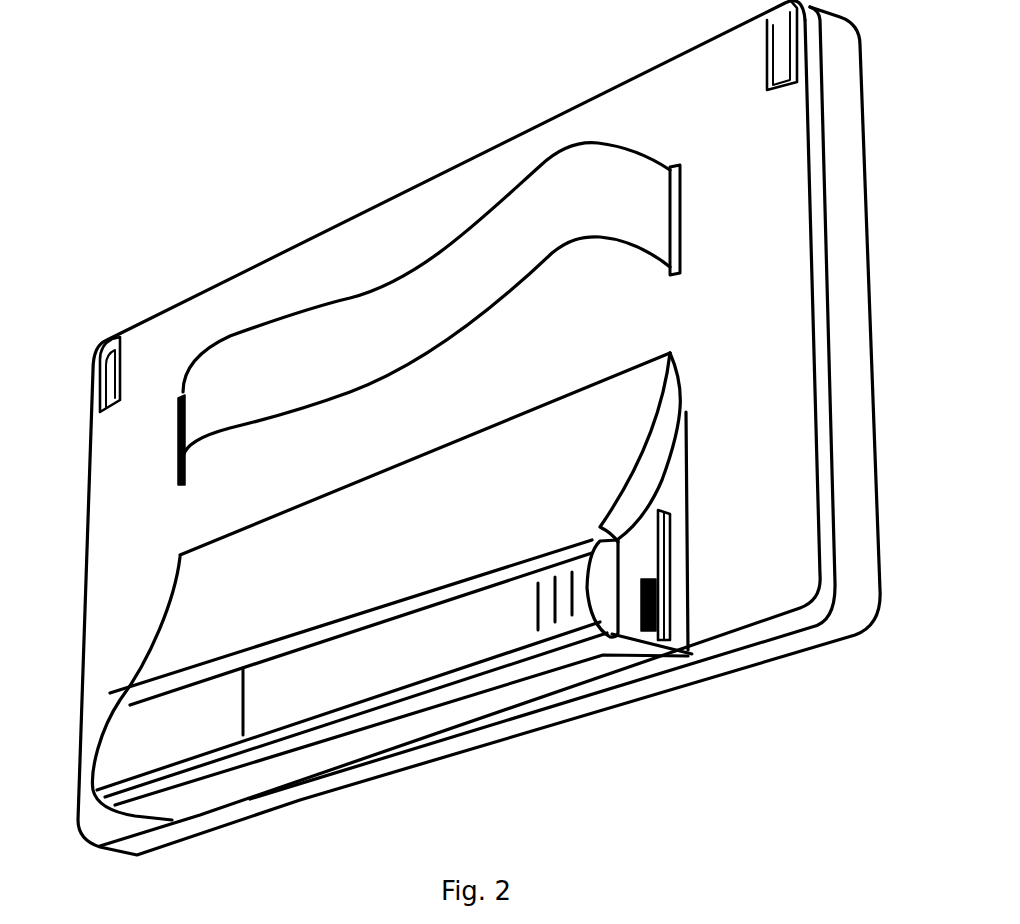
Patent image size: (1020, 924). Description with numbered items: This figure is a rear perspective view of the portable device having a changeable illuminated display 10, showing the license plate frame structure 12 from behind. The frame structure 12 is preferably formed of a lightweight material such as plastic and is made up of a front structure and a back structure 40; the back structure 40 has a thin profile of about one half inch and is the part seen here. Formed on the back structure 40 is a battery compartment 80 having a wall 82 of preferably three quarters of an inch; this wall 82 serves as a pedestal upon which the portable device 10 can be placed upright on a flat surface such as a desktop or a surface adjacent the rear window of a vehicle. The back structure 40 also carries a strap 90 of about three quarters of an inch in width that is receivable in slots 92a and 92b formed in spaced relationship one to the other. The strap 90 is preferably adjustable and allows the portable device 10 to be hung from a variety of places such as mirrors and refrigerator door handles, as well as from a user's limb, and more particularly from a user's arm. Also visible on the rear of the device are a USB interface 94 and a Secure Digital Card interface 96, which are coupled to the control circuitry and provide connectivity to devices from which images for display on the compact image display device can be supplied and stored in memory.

The portable device having a changeable illuminated display 10 is at (820, 665).
The license plate frame structure 12 is at (855, 412).
The back structure 40 is at (147, 524).
The battery compartment 80 is at (400, 725).
The wall 82 is at (505, 622).
The strap 90 is at (228, 362).
The slot 92a is at (177, 455).
The slot 92b is at (680, 238).
The USB interface 94 is at (662, 635).
The Secure Digital Card interface 96 is at (657, 567).